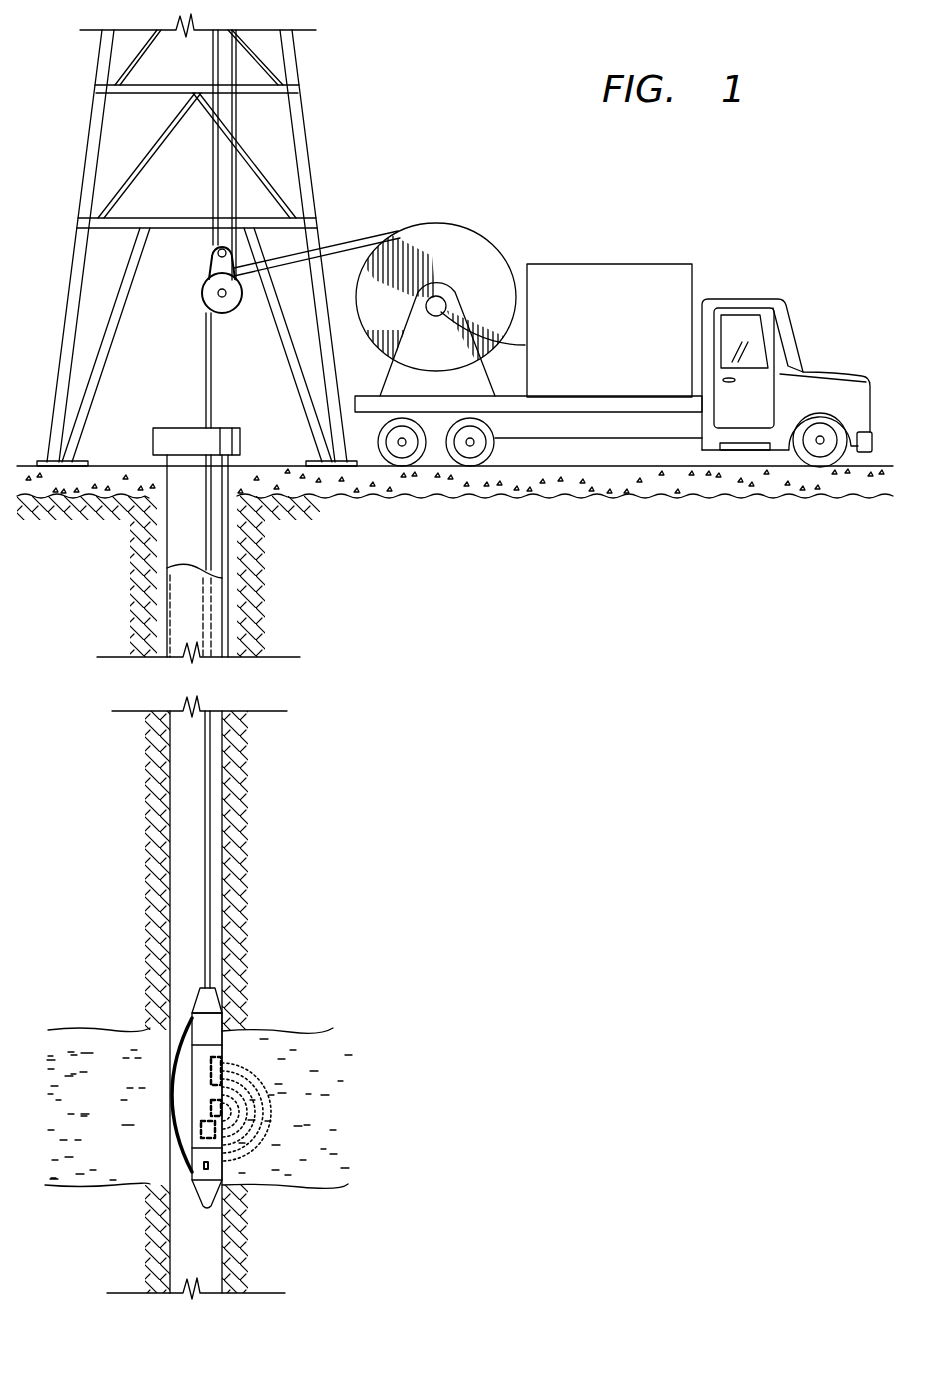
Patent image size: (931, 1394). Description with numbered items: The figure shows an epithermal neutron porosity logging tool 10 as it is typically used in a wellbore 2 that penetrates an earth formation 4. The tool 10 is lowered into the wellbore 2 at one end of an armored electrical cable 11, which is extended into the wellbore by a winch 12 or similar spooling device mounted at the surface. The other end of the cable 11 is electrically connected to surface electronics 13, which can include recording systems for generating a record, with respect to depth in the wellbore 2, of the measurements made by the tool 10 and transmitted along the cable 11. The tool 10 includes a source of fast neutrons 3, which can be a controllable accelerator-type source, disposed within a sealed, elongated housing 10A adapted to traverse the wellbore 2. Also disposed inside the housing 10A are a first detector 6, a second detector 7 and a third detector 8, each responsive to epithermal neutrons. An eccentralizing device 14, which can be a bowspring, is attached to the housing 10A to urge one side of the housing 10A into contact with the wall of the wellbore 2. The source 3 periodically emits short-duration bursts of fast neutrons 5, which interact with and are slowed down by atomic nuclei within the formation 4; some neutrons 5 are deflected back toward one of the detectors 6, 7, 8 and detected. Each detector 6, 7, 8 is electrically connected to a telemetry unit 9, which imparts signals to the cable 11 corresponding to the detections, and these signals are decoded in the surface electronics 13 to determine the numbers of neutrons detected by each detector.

The wellbore 2 is at (185, 934).
The source of fast neutrons 3 is at (195, 1165).
The earth formation 4 is at (326, 1083).
The bursts of fast neutrons 5 is at (270, 1118).
The first detector 6 is at (201, 1128).
The second detector 7 is at (211, 1106).
The third detector 8 is at (211, 1080).
The telemetry unit 9 is at (192, 1017).
The epithermal neutron porosity logging tool 10 is at (223, 1078).
The housing 10A is at (224, 1023).
The armored electrical cable 11 is at (204, 802).
The winch 12 is at (440, 222).
The surface electronics 13 is at (607, 264).
The eccentralizing device 14 is at (190, 1047).